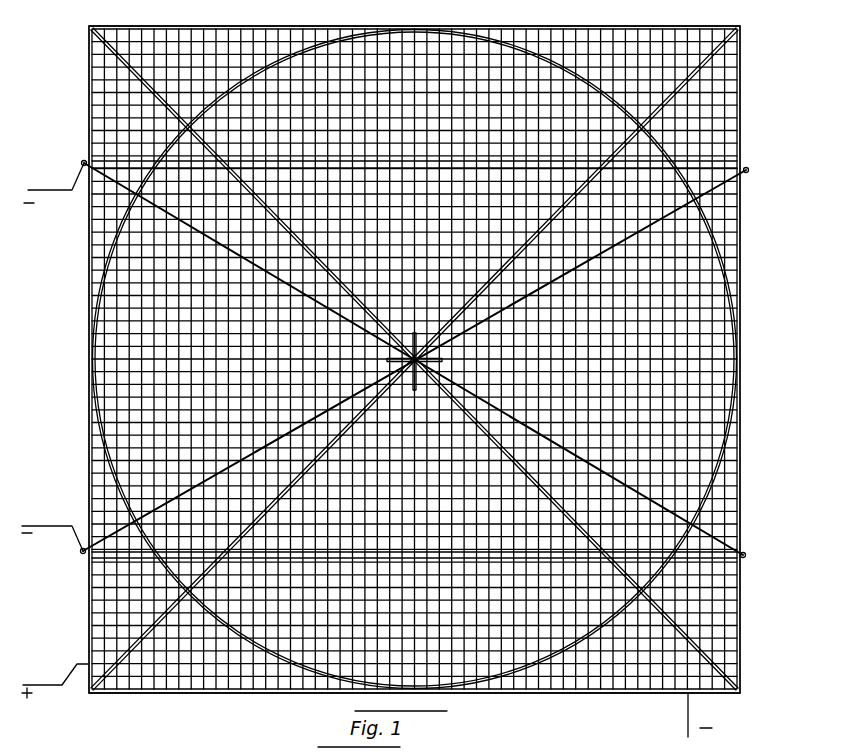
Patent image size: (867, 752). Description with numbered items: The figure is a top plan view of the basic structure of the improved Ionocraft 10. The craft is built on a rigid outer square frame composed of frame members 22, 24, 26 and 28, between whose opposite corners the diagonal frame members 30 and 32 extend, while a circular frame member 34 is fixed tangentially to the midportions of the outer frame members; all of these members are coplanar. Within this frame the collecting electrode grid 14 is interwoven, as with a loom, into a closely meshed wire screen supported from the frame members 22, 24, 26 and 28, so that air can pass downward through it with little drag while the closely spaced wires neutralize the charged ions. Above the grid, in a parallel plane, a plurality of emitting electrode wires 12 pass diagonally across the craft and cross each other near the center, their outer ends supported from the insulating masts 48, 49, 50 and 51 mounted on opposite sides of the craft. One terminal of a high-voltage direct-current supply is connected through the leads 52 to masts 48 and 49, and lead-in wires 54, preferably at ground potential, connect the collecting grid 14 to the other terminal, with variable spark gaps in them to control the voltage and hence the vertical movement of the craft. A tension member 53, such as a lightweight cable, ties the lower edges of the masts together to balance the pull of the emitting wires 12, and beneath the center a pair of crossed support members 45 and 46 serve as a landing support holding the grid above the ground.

The Ionocraft 10 is at (742, 413).
The emitting electrode wires 12 is at (108, 160).
The collecting electrode grid 14 is at (598, 668).
The frame member 22 is at (232, 27).
The frame member 24 is at (749, 214).
The frame member 26 is at (213, 695).
The frame member 28 is at (85, 358).
The diagonal frame member 30 is at (248, 530).
The diagonal frame member 32 is at (580, 528).
The circular frame member 34 is at (216, 102).
The crossed support member 45 is at (417, 341).
The crossed support member 46 is at (437, 358).
The mast 48 is at (80, 553).
The mast 49 is at (80, 164).
The mast 50 is at (748, 555).
The mast 51 is at (750, 170).
The leads 52 is at (52, 192).
The tension member 53 is at (397, 165).
The lead-in wires 54 is at (55, 686).